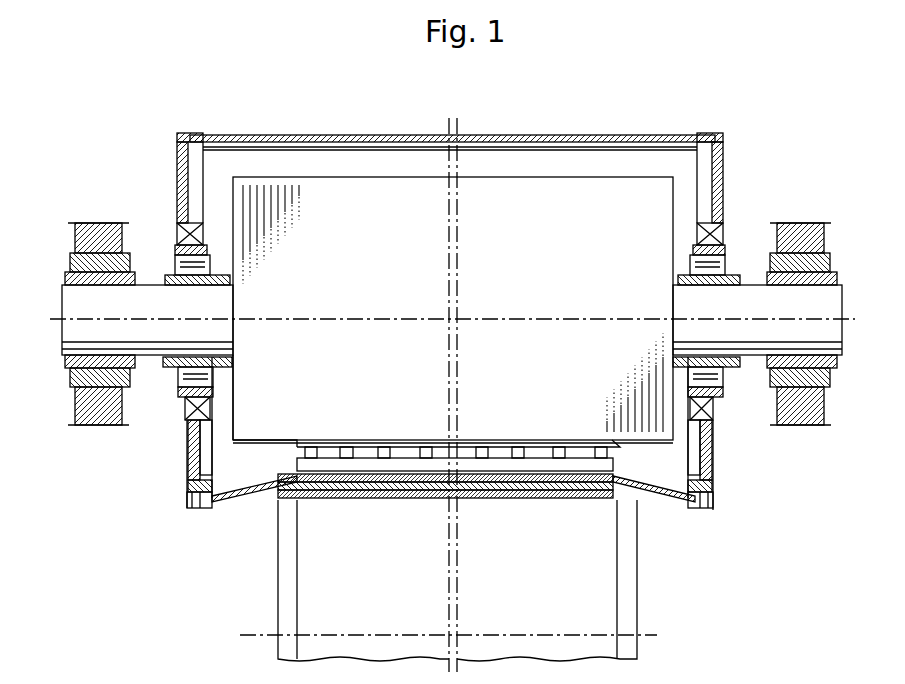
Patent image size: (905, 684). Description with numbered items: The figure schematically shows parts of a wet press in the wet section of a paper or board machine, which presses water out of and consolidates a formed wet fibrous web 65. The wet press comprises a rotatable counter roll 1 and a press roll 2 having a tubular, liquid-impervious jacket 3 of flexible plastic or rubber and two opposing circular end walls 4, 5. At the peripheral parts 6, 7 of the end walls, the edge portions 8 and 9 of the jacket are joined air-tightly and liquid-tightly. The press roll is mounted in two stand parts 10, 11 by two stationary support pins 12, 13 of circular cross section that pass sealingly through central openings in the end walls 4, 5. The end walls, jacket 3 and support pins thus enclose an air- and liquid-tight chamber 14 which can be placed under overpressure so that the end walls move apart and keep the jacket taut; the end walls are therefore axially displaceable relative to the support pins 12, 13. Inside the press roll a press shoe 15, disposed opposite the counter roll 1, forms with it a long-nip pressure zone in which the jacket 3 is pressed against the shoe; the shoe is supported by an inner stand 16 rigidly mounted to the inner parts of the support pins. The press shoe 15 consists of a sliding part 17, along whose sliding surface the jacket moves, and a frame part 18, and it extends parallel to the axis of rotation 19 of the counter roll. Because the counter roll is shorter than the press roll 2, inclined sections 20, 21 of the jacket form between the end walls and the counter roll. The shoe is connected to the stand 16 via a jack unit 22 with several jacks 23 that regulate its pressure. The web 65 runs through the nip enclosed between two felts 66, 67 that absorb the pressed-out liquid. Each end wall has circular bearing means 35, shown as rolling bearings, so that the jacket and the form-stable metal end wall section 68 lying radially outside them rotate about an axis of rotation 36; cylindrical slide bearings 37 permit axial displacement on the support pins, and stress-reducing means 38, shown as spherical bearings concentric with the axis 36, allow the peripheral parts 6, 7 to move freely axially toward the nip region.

The counter roll 1 is at (632, 586).
The press roll 2 is at (715, 455).
The jacket 3 is at (574, 134).
The end wall 4 is at (198, 473).
The end wall 5 is at (725, 162).
The peripheral part 6 is at (180, 500).
The peripheral part 7 is at (713, 484).
The edge portion 8 is at (200, 512).
The edge portion 9 is at (692, 512).
The stand part 10 is at (70, 390).
The stand part 11 is at (835, 380).
The support pin 12 is at (65, 297).
The support pin 13 is at (832, 332).
The chamber 14 is at (470, 158).
The press shoe 15 is at (445, 503).
The inner stand 16 is at (262, 444).
The sliding part 17 is at (365, 470).
The frame part 18 is at (327, 460).
The axis of rotation 19 is at (655, 635).
The inclined section 20 is at (248, 502).
The inclined section 21 is at (662, 500).
The jack unit 22 is at (510, 445).
The jack 23 is at (422, 455).
The bearing means 35 is at (180, 238).
The axis of rotation 36 is at (842, 290).
The slide bearing 37 is at (178, 262).
The stress-reducing means 38 is at (180, 378).
The fibrous web 65 is at (468, 482).
The felt 66 is at (510, 490).
The felt 67 is at (555, 497).
The end wall section 68 is at (195, 450).